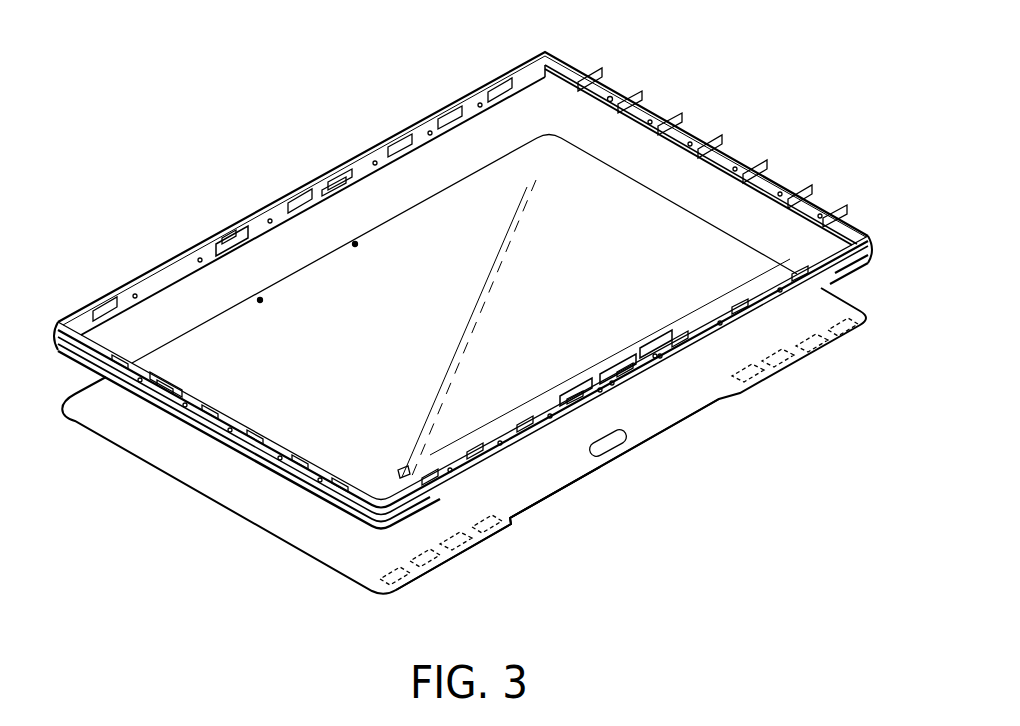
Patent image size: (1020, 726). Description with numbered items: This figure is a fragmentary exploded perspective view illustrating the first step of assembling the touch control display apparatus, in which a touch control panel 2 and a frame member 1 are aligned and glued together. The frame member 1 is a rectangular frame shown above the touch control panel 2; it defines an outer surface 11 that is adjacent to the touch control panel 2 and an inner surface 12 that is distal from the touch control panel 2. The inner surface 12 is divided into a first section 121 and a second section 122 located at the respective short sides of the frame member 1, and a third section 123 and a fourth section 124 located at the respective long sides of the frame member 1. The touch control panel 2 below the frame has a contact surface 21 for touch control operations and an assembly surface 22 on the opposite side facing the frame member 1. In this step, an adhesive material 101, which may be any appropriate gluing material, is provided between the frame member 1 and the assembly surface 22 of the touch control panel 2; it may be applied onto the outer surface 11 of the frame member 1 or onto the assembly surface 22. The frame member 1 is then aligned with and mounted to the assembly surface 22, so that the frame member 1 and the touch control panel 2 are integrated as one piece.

The frame member 1 is at (696, 120).
The outer surface 11 is at (273, 470).
The inner surface 12 is at (212, 242).
The first section 121 is at (173, 413).
The second section 122 is at (613, 92).
The third section 123 is at (338, 185).
The fourth section 124 is at (590, 410).
The touch control panel 2 is at (774, 338).
The contact surface 21 is at (530, 510).
The assembly surface 22 is at (540, 473).
The adhesive material 101 is at (447, 569).